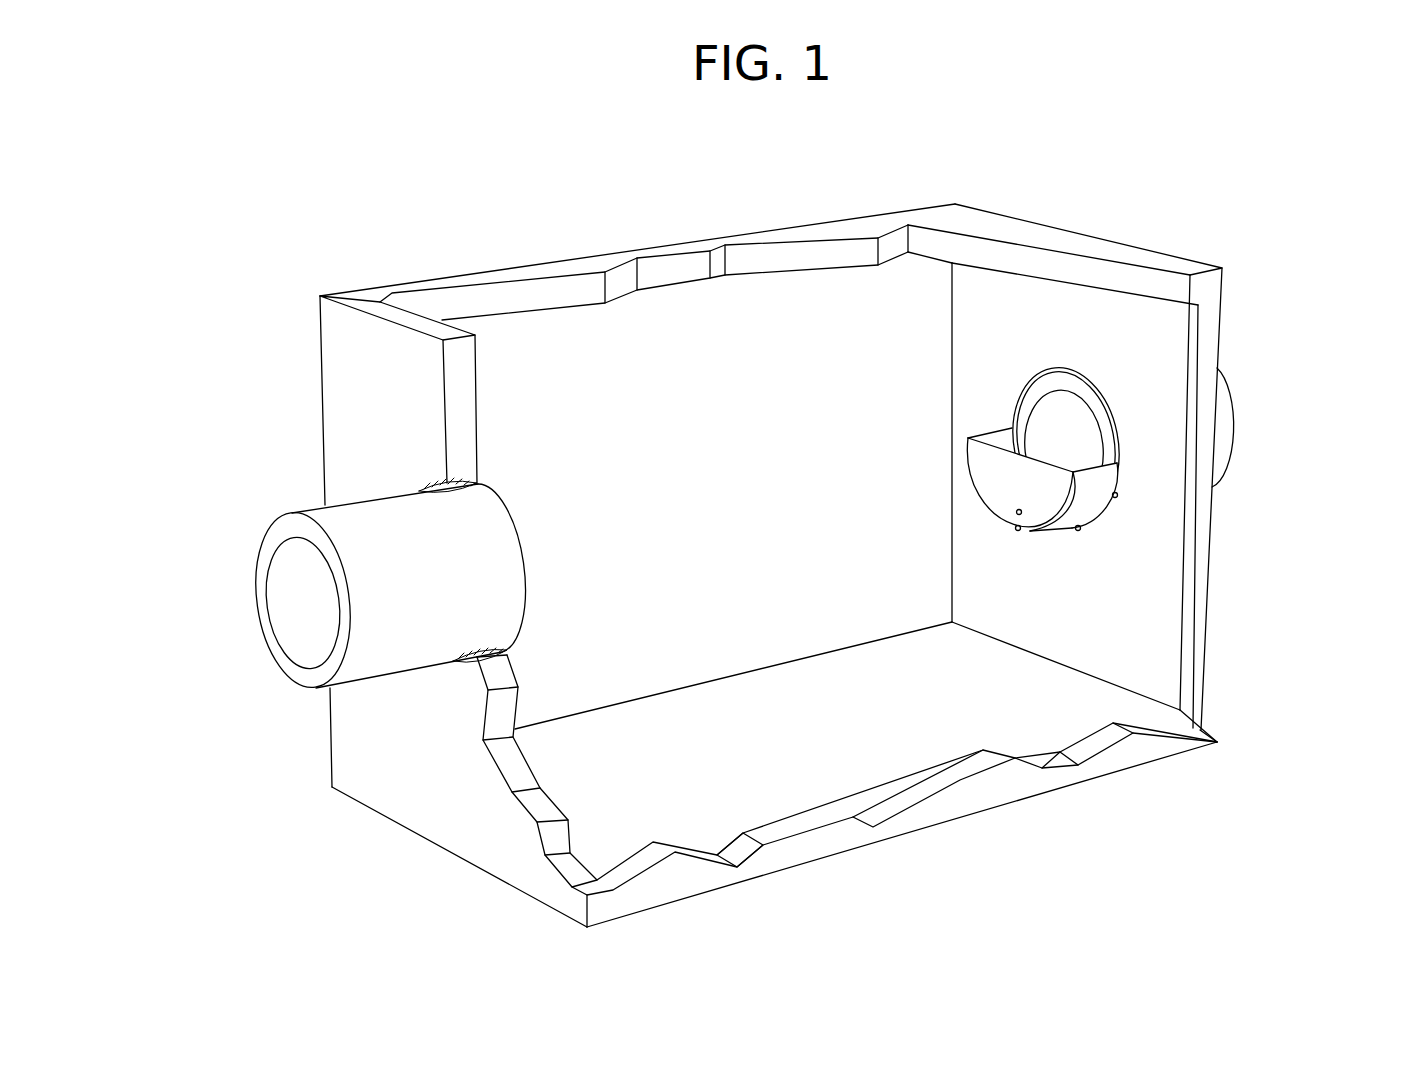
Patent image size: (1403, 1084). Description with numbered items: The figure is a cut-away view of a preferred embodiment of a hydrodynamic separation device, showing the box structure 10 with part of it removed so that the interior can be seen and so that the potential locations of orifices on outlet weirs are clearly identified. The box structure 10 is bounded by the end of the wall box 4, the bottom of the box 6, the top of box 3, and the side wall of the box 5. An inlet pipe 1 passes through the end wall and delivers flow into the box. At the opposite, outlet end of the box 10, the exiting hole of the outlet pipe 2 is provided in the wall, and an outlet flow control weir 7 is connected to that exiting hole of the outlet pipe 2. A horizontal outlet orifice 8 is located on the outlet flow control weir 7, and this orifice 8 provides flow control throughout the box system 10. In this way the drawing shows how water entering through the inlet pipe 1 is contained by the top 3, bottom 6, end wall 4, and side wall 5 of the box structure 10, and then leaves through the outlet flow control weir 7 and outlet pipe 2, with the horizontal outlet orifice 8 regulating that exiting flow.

The inlet pipe 1 is at (297, 567).
The outlet pipe 2 is at (1225, 410).
The top of box 3 is at (570, 268).
The end of the wall box 4 is at (437, 765).
The side wall of the box 5 is at (832, 357).
The bottom of the box 6 is at (1095, 705).
The outlet flow control weir 7 is at (1083, 490).
The horizontal outlet orifice 8 is at (1018, 530).
The box structure 10 is at (578, 945).